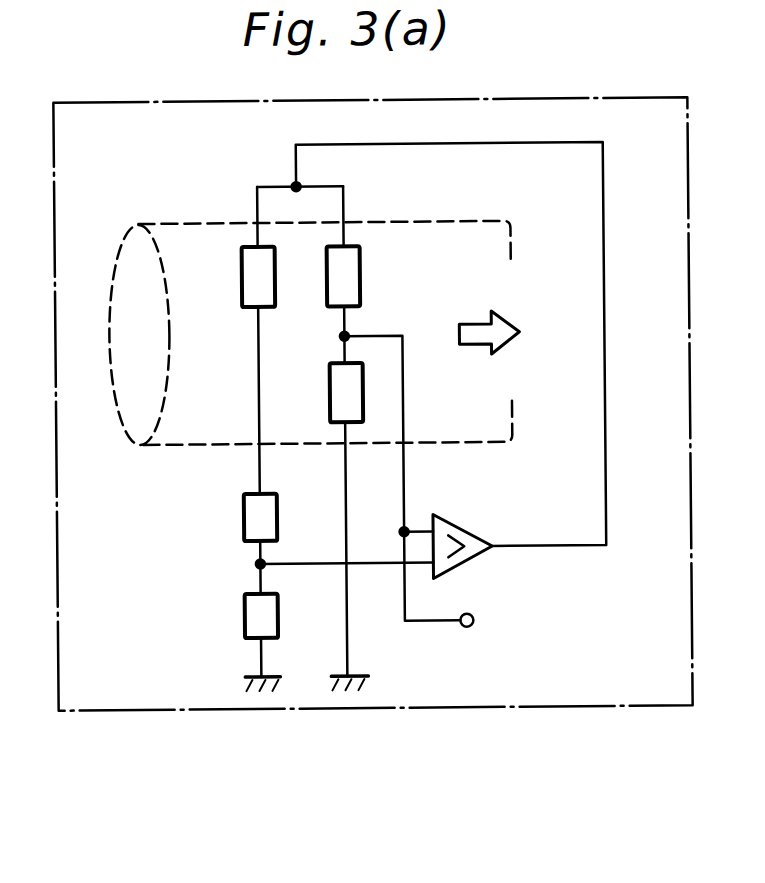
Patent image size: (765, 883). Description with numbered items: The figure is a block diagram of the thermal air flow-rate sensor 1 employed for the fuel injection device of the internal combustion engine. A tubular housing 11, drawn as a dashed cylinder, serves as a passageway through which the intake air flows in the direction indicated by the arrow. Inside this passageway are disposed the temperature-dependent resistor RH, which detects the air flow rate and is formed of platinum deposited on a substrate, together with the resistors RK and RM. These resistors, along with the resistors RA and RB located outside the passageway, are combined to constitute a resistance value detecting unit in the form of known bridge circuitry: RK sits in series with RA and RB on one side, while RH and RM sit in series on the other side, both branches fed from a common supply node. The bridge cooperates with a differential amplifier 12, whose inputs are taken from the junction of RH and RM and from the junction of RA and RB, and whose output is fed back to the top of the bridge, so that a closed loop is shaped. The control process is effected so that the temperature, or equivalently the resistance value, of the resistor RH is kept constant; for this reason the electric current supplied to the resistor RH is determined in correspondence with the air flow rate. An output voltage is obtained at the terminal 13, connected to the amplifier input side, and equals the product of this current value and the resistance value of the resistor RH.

The thermal air flow-rate sensor 1 is at (640, 710).
The tubular housing 11 is at (184, 447).
The differential amplifier 12 is at (458, 522).
The terminal 13 is at (457, 583).
The resistor RK is at (254, 281).
The temperature-dependent resistor RH is at (353, 275).
The resistor RM is at (330, 395).
The resistor RA is at (277, 514).
The resistor RB is at (277, 616).